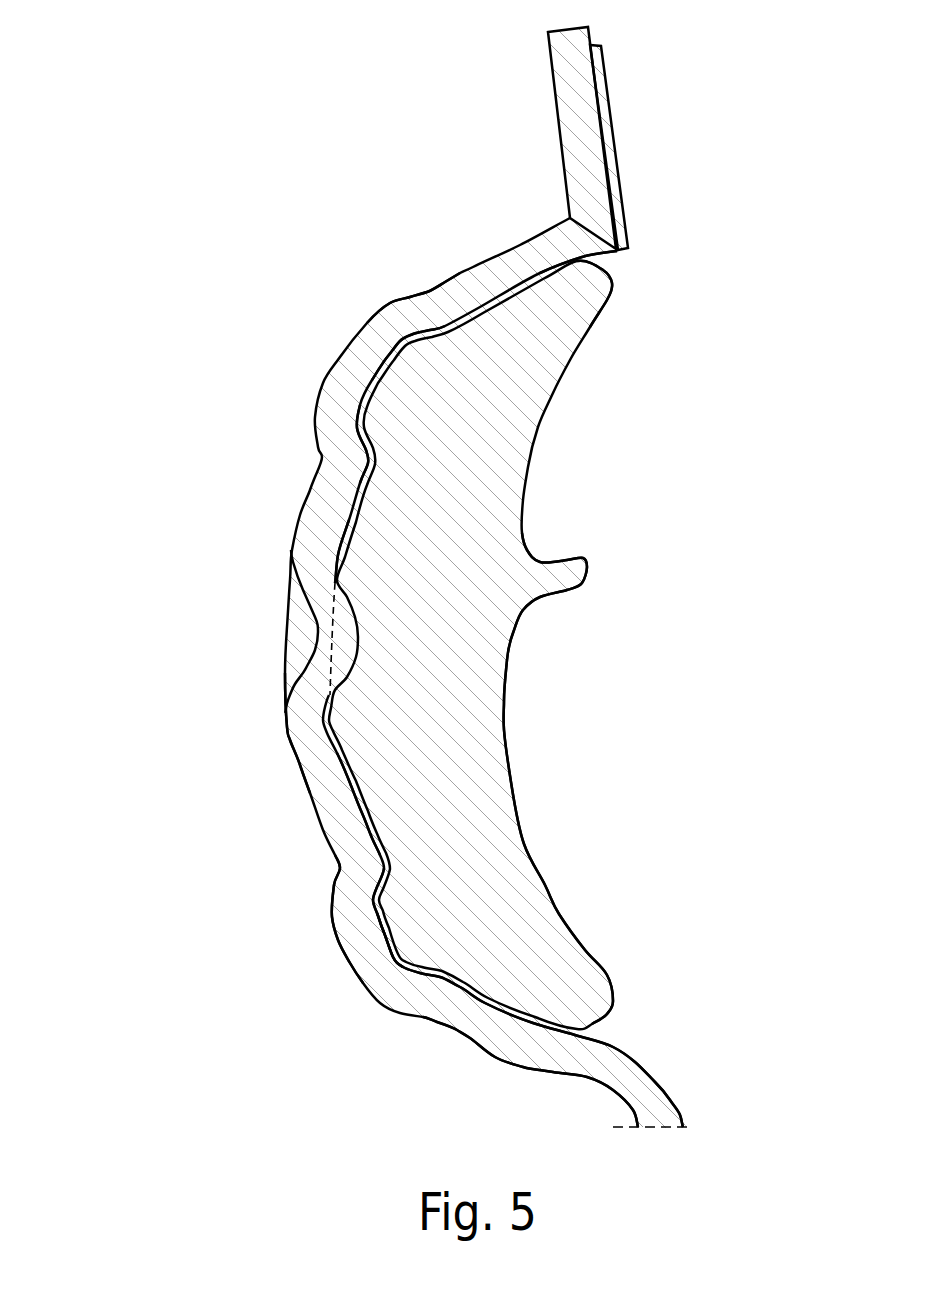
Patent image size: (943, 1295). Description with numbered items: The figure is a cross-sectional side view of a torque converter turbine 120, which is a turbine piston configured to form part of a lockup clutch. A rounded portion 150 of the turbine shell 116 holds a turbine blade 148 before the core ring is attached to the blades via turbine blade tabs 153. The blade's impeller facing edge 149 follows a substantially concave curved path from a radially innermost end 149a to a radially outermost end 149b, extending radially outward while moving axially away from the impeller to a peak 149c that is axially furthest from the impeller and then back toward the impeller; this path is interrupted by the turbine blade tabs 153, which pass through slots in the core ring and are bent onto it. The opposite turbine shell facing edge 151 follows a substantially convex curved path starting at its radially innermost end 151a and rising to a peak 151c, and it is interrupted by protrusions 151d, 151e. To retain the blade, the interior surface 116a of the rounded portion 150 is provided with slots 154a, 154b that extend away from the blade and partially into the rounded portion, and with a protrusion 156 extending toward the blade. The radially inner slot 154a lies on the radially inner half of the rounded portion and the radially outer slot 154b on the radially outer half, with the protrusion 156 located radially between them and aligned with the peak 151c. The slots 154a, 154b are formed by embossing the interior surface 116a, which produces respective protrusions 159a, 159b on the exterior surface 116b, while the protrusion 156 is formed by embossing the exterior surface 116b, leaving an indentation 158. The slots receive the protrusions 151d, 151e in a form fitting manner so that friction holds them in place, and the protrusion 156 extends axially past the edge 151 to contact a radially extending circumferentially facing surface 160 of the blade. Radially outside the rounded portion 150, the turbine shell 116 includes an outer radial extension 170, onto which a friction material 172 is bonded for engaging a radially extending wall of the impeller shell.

The turbine shell 116 is at (467, 1027).
The interior surface 116a is at (366, 819).
The exterior surface 116b is at (290, 737).
The turbine 120 is at (680, 80).
The turbine blade 148 is at (500, 468).
The impeller facing edge 149 is at (522, 828).
The radially innermost end 149a is at (616, 992).
The radially outermost end 149b is at (613, 277).
The peak 149c is at (511, 653).
The rounded portion 150 is at (292, 388).
The turbine shell facing edge 151 is at (330, 518).
The radially innermost end 151a is at (587, 1032).
The peak 151c is at (330, 640).
The protrusion 151d is at (577, 255).
The protrusion 151e is at (377, 345).
The turbine blade tab 153 is at (583, 561).
The radially inner slot 154a is at (378, 965).
The radially outer slot 154b is at (360, 345).
The protrusion 156 is at (352, 620).
The indentation 158 is at (295, 625).
The protrusion 159a is at (332, 957).
The protrusion 159b is at (405, 280).
The radially extending circumferentially facing surface 160 is at (468, 750).
The outer radial extension 170 is at (540, 53).
The friction material 172 is at (612, 163).